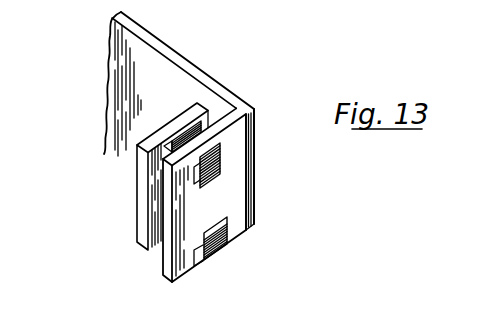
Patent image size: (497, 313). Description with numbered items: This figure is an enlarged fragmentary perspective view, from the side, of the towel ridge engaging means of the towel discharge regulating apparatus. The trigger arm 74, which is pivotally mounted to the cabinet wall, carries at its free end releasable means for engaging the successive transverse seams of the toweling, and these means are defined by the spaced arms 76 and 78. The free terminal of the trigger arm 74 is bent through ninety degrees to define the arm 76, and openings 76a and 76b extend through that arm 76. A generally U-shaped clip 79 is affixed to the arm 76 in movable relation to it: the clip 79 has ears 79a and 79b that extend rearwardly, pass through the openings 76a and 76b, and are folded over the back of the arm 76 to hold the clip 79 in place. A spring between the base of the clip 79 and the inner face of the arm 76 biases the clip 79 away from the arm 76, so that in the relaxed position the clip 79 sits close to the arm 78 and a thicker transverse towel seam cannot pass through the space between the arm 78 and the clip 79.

The trigger arm 74 is at (119, 57).
The arm 76 is at (164, 260).
The opening 76a is at (220, 150).
The opening 76b is at (201, 259).
The arm 78 is at (136, 204).
The U-shaped clip 79 is at (188, 138).
The ear 79a is at (199, 189).
The ear 79b is at (208, 229).